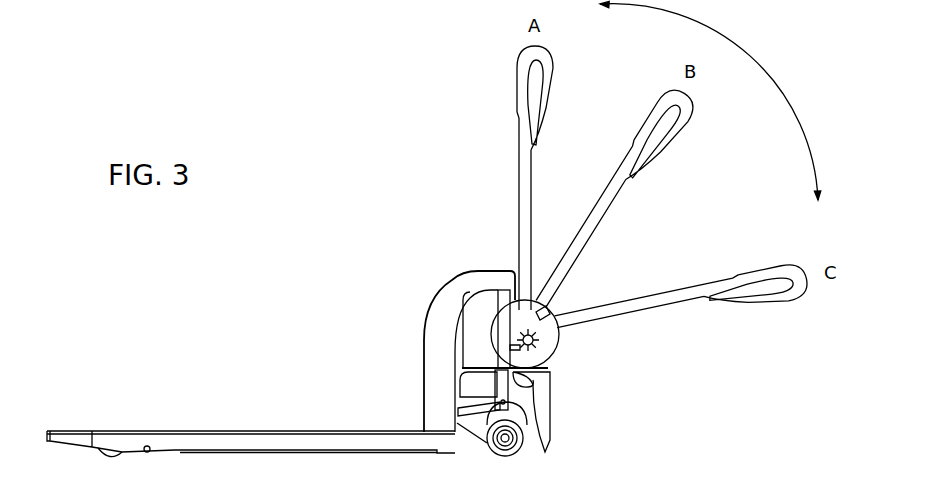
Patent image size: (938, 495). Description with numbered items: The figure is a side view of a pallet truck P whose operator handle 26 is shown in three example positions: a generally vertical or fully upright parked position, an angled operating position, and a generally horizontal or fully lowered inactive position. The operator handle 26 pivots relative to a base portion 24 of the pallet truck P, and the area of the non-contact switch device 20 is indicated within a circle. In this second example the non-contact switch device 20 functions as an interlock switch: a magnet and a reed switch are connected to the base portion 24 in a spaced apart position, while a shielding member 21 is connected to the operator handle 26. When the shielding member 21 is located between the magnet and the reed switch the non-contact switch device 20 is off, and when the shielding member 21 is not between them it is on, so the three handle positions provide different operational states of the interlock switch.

The pallet truck P is at (418, 358).
The non-contact switch device 20 is at (559, 355).
The shielding member 21 is at (726, 489).
The base portion 24 is at (510, 323).
The operator handle 26 is at (514, 212).